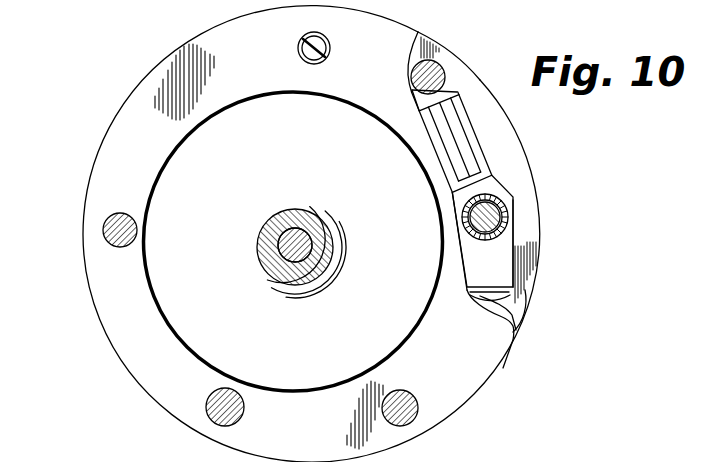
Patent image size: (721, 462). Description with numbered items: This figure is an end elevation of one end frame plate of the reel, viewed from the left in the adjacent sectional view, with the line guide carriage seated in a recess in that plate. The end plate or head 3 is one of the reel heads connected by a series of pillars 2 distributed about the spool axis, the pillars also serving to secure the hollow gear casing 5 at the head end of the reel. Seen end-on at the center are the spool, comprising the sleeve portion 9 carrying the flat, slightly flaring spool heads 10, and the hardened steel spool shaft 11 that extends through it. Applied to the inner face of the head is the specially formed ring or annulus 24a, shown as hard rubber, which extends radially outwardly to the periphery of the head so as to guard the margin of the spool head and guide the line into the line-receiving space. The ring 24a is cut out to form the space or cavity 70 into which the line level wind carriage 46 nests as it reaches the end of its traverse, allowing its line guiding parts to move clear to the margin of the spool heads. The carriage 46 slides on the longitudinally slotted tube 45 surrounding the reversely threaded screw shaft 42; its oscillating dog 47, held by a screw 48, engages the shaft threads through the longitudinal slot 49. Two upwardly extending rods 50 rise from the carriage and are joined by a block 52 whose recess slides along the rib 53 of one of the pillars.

The pillars 2 is at (103, 232).
The end plate or head 3 is at (513, 157).
The gear casing 5 is at (148, 461).
The sleeve portion 9 is at (267, 229).
The spool heads 10 is at (183, 327).
The spool shaft 11 is at (292, 263).
The ring or annulus 24a is at (447, 402).
The reversely threaded screw shaft 42 is at (500, 214).
The longitudinally slotted tube 45 is at (505, 193).
The line level wind carriage 46 is at (513, 262).
The oscillating dog 47 is at (517, 236).
The screw 48 is at (500, 300).
The longitudinal slot 49 is at (470, 237).
The upwardly extending rods 50 is at (445, 70).
The block 52 is at (450, 92).
The rib 53 is at (418, 99).
The space or cavity 70 is at (512, 332).